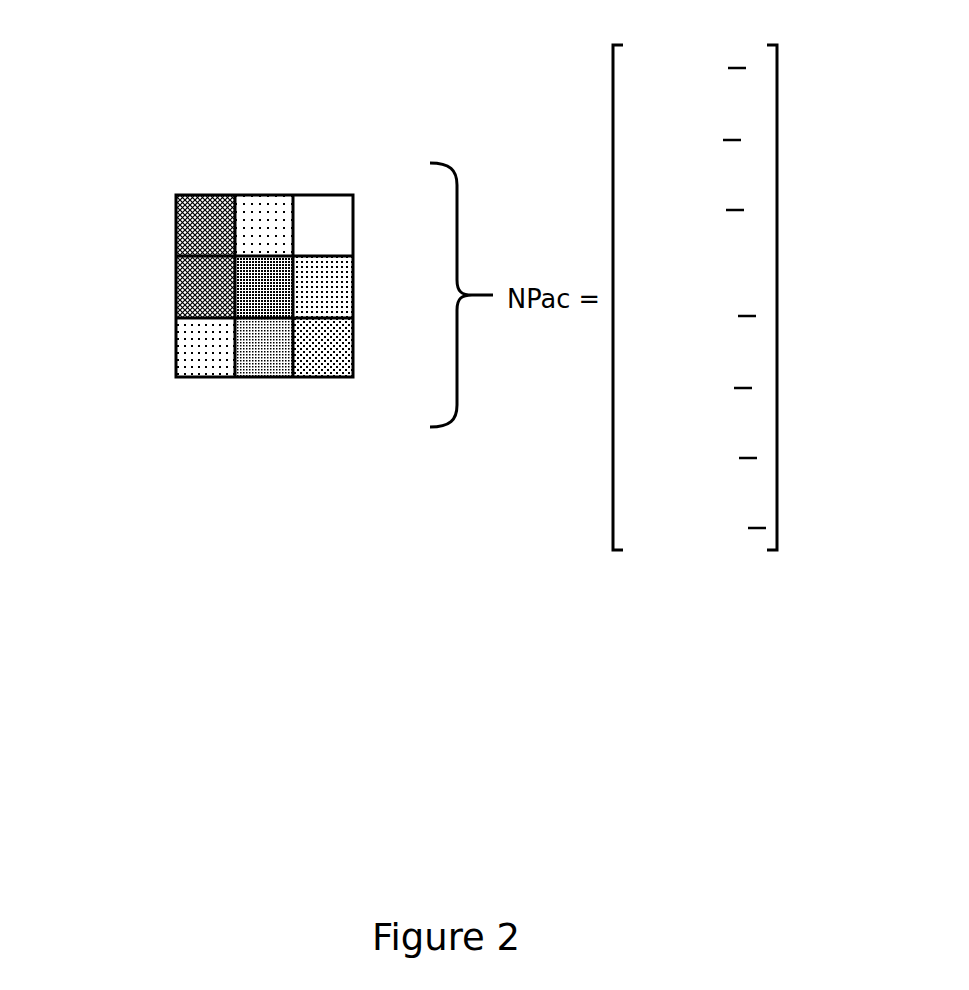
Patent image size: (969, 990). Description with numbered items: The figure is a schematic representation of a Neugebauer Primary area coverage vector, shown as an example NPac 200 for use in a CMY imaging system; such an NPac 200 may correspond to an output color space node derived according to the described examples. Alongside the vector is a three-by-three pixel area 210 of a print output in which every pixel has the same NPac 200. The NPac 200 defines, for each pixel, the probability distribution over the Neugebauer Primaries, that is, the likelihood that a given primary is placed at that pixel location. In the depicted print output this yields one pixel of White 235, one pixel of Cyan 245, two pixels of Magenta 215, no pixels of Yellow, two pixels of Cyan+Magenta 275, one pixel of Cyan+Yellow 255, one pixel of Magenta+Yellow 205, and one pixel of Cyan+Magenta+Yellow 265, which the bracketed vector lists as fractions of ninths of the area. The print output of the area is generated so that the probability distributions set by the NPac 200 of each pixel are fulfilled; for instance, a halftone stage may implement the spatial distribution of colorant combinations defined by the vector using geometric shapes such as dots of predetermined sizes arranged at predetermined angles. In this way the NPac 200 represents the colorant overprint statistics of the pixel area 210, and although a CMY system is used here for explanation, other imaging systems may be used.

The NPac 200 is at (596, 56).
The three-by-three pixel area 210 is at (146, 114).
The pixel of Magenta+Yellow (MY) 205 is at (280, 195).
The pixel of White (W) 235 is at (309, 195).
The pixels of Cyan+Magenta (CM) 275 is at (177, 205).
The pixels of Magenta (M) 215 is at (177, 350).
The pixel of Cyan+Magenta+Yellow (CMY) 265 is at (258, 290).
The pixel of Cyan+Yellow (CY) 255 is at (250, 378).
The pixel of Cyan (C) 245 is at (352, 348).